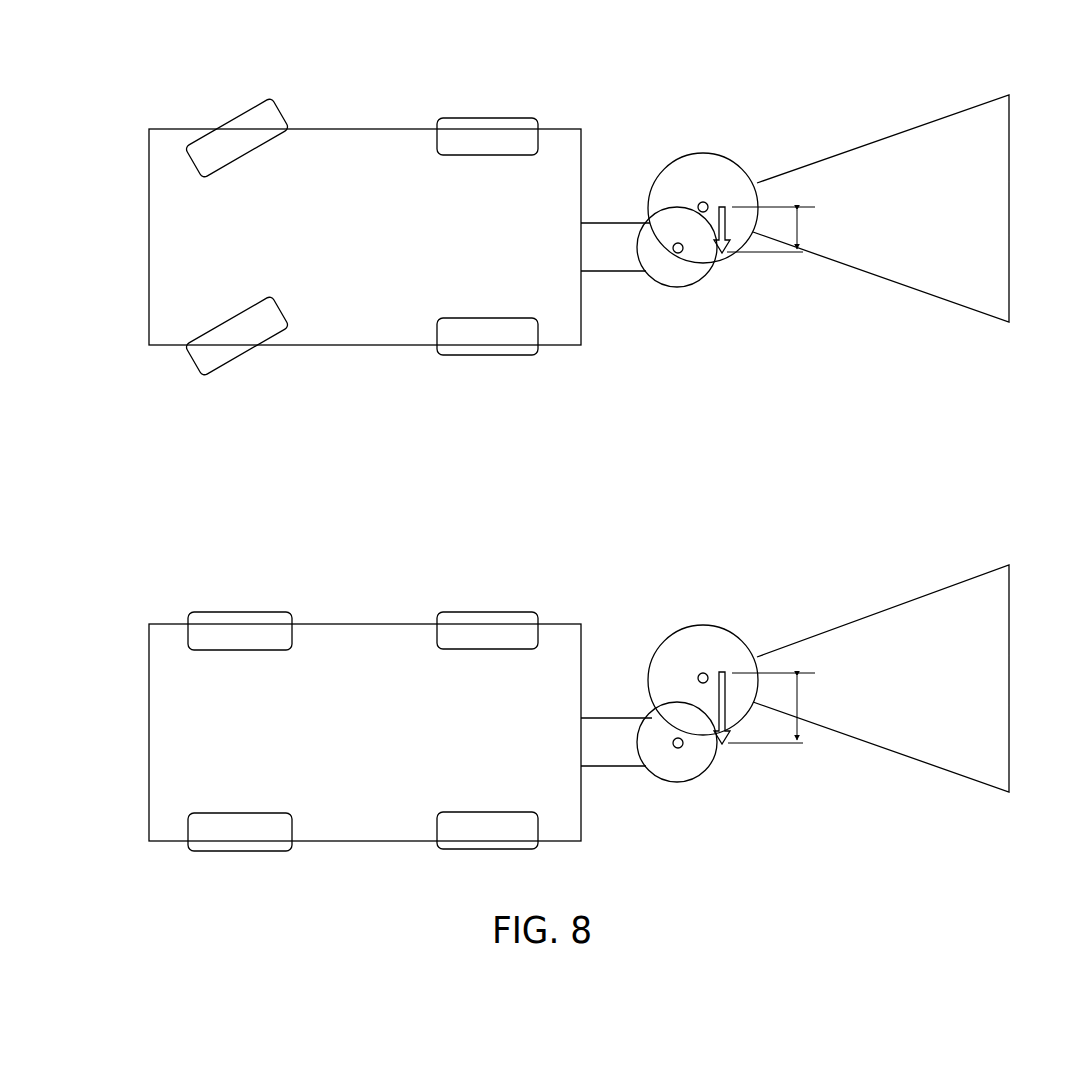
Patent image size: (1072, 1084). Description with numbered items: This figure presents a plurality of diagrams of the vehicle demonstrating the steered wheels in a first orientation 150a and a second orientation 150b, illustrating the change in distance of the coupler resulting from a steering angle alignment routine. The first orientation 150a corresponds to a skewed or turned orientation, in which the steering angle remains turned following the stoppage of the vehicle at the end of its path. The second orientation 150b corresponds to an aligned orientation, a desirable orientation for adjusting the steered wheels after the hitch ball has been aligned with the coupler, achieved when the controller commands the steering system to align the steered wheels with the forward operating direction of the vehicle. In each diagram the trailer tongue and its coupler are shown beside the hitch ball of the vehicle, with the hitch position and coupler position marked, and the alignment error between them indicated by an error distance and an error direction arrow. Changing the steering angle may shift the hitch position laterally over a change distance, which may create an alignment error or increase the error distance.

The first orientation 150a is at (100, 96).
The second orientation 150b is at (117, 549).